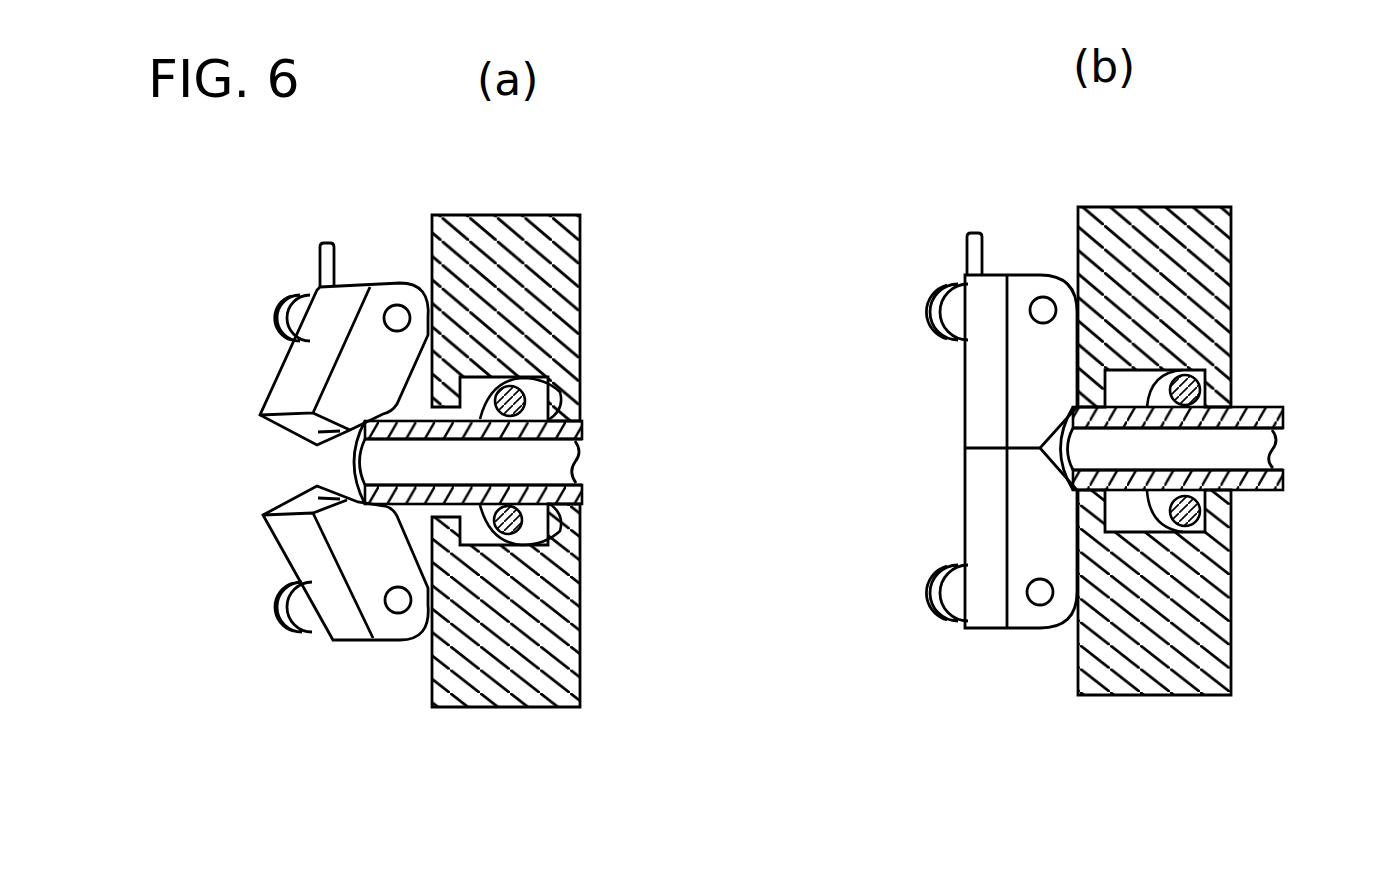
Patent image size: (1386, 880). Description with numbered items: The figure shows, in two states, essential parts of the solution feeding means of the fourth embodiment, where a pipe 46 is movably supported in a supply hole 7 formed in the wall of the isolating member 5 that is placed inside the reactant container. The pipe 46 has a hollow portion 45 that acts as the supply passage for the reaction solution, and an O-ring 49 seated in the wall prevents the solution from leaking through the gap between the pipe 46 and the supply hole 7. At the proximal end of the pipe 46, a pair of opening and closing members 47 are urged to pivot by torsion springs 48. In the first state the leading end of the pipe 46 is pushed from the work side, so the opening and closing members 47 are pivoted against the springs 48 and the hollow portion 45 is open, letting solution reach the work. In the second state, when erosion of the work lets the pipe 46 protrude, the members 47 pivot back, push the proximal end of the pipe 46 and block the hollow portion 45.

The isolating member 5 is at (507, 660).
The supply hole 7 is at (583, 542).
The hollow portion 45 is at (555, 462).
The pipe 46 is at (583, 428).
The opening and closing member 47 is at (290, 380).
The torsion spring 48 is at (280, 300).
The O-ring 49 is at (533, 577).